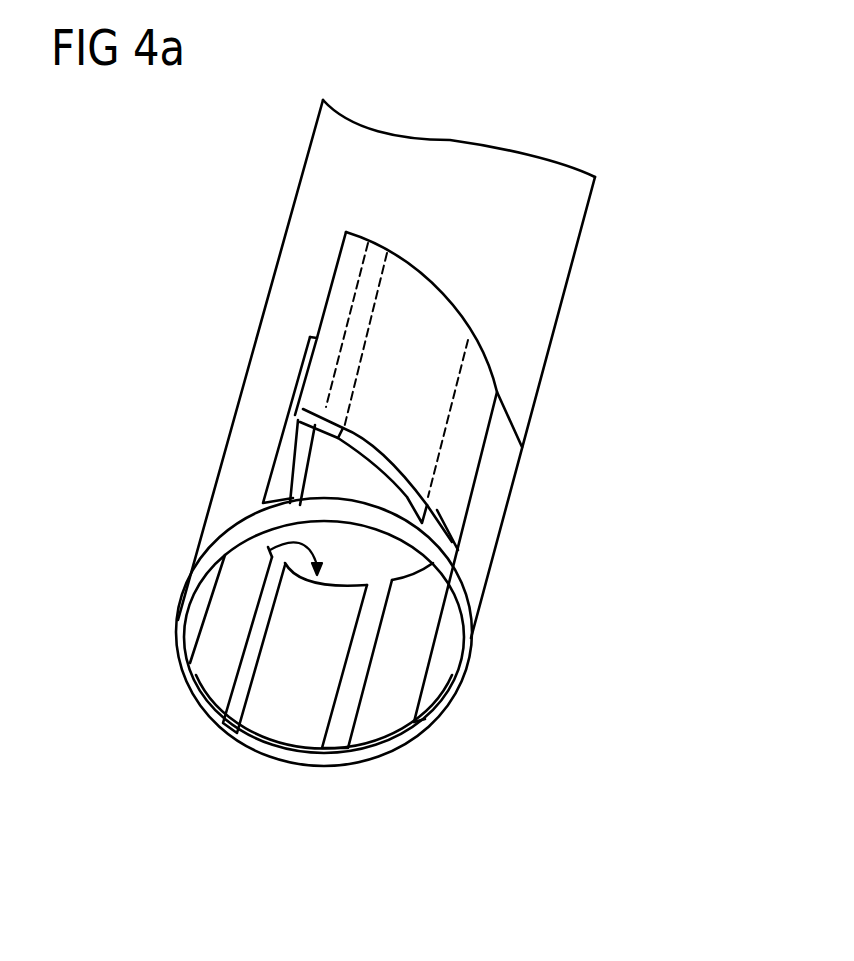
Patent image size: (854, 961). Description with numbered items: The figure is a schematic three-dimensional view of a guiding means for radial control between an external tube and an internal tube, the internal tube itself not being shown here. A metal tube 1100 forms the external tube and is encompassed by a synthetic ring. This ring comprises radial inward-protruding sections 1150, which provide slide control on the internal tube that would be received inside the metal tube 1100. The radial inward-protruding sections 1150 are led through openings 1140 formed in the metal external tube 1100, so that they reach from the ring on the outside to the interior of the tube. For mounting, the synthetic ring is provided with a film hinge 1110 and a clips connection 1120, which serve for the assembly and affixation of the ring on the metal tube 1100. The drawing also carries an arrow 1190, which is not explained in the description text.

The metal tube 1100 is at (538, 283).
The film hinge 1110 is at (487, 445).
The clips connection 1120 is at (317, 422).
The openings 1140 is at (392, 498).
The radial inward-protruding sections 1150 is at (396, 716).
The rotation direction arrow 1190 is at (268, 543).